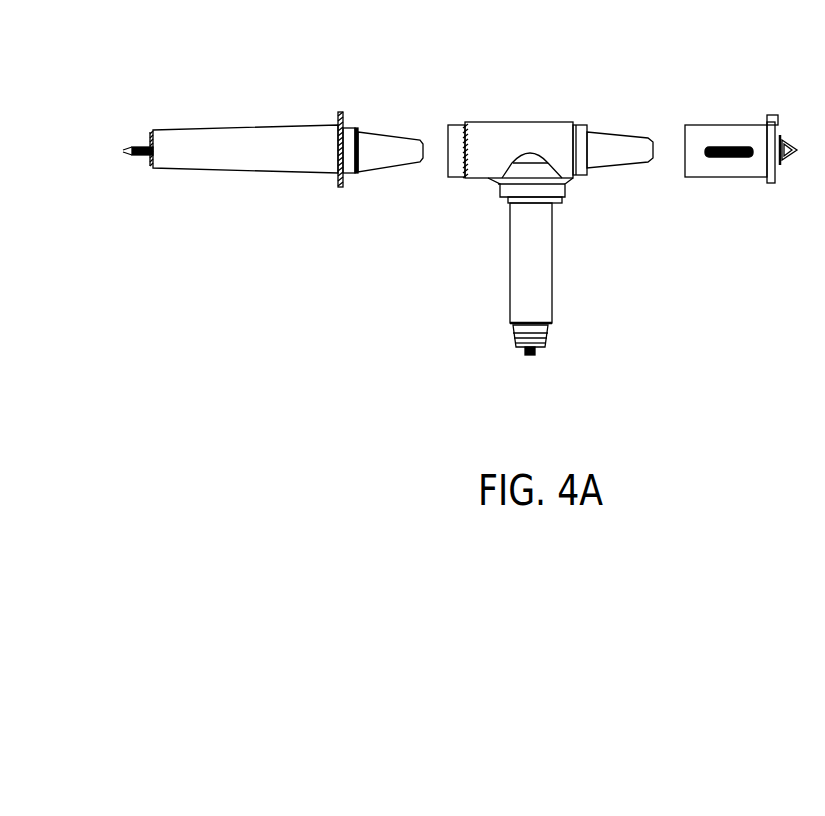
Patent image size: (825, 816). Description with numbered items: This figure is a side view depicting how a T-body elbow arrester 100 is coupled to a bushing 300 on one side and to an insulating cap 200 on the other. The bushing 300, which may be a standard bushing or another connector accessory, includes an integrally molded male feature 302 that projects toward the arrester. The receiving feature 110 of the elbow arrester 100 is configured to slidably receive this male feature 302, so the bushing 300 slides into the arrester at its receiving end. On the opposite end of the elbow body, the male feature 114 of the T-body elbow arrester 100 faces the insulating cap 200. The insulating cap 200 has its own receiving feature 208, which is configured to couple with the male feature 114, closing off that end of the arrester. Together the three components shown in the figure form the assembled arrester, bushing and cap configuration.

The T-body elbow arrester 100 is at (526, 90).
The receiving feature 110 is at (453, 170).
The male feature 114 is at (617, 168).
The insulating cap 200 is at (721, 90).
The receiving feature 208 is at (703, 172).
The bushing 300 is at (280, 97).
The male feature 302 is at (378, 162).